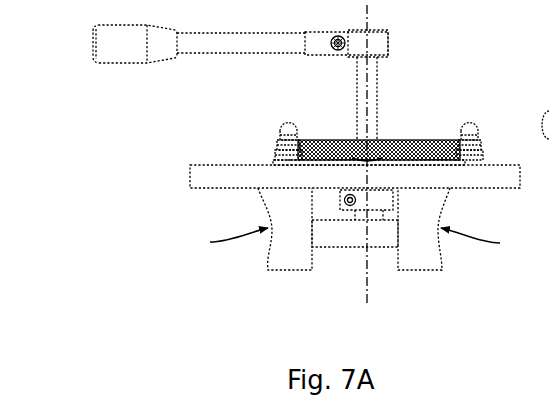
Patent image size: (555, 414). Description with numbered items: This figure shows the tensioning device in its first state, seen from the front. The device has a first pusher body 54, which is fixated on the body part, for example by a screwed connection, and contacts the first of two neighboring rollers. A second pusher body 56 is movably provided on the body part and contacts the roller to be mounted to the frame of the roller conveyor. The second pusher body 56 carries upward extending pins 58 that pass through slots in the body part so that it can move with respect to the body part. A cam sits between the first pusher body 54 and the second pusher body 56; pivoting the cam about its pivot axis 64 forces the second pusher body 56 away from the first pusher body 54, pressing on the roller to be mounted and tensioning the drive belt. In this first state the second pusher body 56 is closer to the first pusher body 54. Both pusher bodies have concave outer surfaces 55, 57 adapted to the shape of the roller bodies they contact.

The first pusher body 54 is at (432, 255).
The concave outer surface 55 is at (489, 241).
The second pusher body 56 is at (270, 262).
The concave outer surface 57 is at (220, 241).
The upward extending pins 58 is at (292, 153).
The pivot axis 64 is at (352, 290).